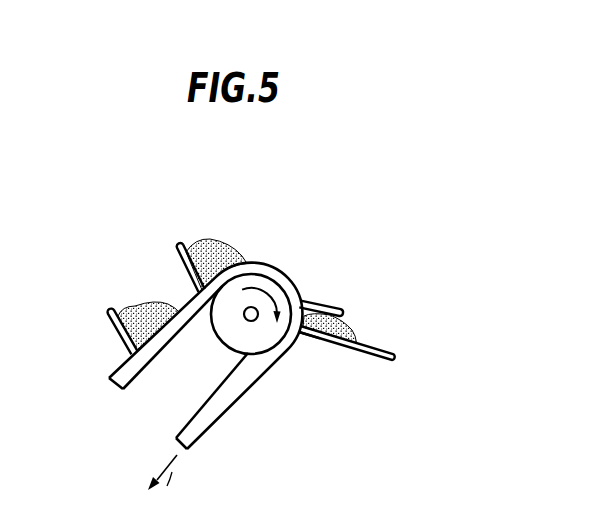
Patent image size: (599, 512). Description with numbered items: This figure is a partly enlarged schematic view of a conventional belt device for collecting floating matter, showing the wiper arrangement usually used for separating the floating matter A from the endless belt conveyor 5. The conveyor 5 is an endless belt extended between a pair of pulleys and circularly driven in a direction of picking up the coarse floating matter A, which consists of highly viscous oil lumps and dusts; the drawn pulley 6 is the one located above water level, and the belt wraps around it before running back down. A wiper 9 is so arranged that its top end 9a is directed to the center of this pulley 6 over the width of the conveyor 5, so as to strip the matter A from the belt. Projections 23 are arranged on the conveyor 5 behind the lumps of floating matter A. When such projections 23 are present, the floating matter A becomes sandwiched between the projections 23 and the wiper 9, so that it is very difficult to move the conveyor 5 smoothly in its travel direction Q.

The endless belt conveyor 5 is at (207, 426).
The pulley 6 is at (267, 290).
The wiper 9 is at (351, 348).
The top end of the wiper 9a is at (305, 342).
The projections 23 is at (173, 255).
The coarse floating matter A is at (225, 253).
The direction of belt travel Q is at (162, 483).